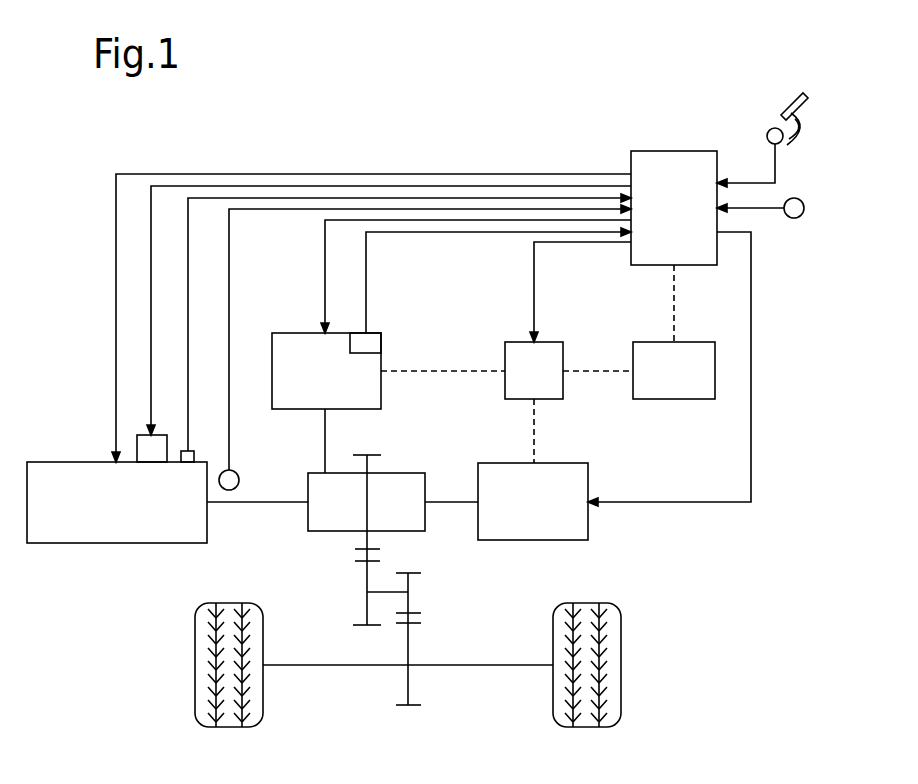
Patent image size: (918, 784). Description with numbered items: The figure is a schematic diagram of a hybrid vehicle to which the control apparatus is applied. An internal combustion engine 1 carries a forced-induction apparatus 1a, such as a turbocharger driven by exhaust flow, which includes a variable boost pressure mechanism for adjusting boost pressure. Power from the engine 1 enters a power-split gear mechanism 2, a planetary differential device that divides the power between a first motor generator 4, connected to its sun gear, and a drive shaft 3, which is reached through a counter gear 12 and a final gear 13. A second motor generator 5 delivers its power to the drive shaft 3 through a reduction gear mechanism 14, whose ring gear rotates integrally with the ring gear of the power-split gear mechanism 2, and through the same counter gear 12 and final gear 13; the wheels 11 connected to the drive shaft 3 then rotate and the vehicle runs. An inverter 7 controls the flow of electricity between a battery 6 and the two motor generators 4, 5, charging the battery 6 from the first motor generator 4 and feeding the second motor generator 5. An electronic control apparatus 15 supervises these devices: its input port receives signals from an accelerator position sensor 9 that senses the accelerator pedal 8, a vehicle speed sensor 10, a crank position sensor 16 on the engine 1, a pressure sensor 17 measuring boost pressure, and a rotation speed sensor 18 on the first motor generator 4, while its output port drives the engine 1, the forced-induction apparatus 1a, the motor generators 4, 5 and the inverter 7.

The internal combustion engine 1 is at (64, 462).
The forced-induction apparatus 1a is at (156, 435).
The power-split gear mechanism 2 is at (305, 473).
The drive shaft 3 is at (487, 665).
The first motor generator 4 is at (285, 333).
The second motor generator 5 is at (494, 463).
The battery 6 is at (645, 341).
The inverter 7 is at (509, 341).
The accelerator pedal 8 is at (804, 96).
The accelerator position sensor 9 is at (768, 134).
The vehicle speed sensor 10 is at (800, 199).
The wheels 11 is at (195, 643).
The counter gear 12 is at (360, 581).
The final gear 13 is at (412, 635).
The reduction gear mechanism 14 is at (436, 466).
The electronic control apparatus 15 is at (655, 151).
The crank position sensor 16 is at (239, 473).
The pressure sensor 17 is at (194, 451).
The rotation speed sensor 18 is at (384, 343).